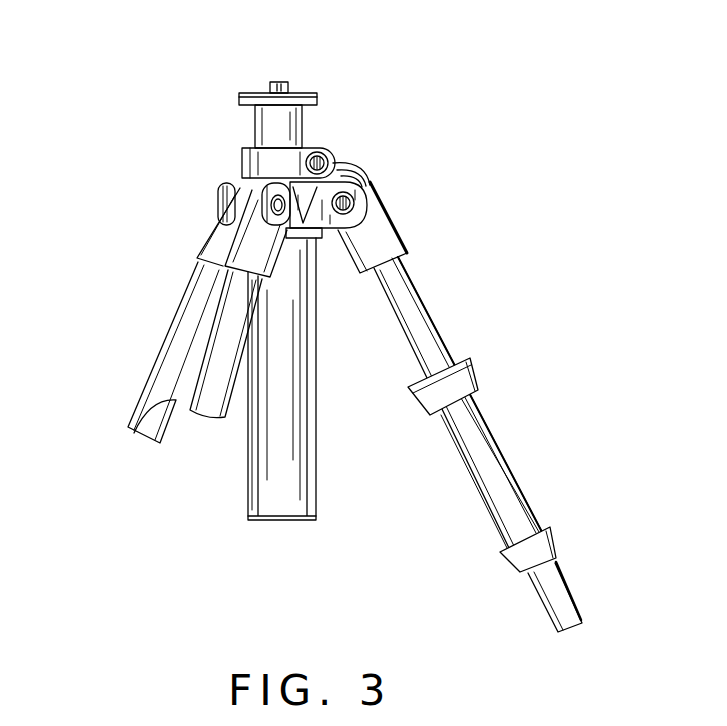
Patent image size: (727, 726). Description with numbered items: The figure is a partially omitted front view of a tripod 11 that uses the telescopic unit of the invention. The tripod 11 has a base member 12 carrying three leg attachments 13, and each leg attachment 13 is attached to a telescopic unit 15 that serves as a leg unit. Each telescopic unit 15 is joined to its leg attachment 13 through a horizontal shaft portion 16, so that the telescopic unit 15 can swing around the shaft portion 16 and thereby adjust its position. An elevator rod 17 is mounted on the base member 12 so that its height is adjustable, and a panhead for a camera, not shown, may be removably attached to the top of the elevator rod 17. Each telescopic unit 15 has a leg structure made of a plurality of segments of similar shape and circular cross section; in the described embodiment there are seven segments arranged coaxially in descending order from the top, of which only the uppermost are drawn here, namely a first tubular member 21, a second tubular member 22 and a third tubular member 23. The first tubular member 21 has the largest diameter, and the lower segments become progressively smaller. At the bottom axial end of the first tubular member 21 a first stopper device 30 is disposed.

The tripod 11 is at (338, 66).
The base member 12 is at (335, 158).
The leg attachment 13 is at (283, 187).
The telescopic unit 15 is at (430, 289).
The horizontal shaft portion 16 is at (335, 215).
The elevator rod 17 is at (292, 128).
The first tubular member 21 is at (396, 355).
The second tubular member 22 is at (471, 485).
The third tubular member 23 is at (575, 579).
The first stopper device 30 is at (483, 371).